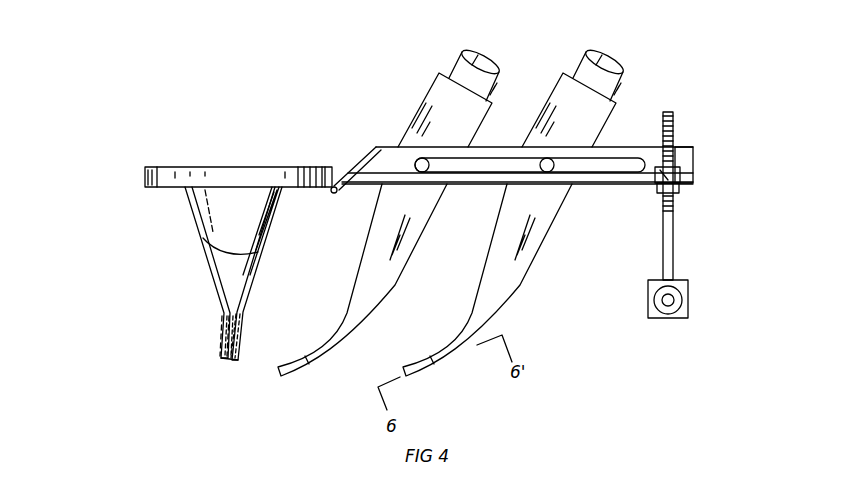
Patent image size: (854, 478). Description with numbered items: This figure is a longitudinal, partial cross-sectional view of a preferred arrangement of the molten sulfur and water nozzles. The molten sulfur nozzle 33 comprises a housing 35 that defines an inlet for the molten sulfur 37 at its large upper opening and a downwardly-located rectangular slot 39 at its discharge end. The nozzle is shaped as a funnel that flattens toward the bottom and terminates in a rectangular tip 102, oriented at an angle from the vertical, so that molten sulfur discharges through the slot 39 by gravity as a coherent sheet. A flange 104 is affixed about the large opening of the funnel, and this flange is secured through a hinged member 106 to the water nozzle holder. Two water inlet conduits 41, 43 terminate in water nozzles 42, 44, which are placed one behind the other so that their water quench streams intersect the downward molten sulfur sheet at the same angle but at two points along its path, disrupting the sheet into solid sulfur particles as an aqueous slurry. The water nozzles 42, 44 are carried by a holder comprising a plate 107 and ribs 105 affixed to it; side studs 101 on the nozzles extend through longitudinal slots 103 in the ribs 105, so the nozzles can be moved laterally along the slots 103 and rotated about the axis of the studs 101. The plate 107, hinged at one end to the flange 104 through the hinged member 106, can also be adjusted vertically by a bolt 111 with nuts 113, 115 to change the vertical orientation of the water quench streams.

The molten sulfur nozzle 33 is at (186, 218).
The housing 35 is at (270, 220).
The inlet for the molten sulfur 37 is at (236, 166).
The rectangular slot 39 is at (222, 358).
The water inlet conduit 41 is at (446, 92).
The water nozzle 42 is at (308, 360).
The water inlet conduit 43 is at (566, 97).
The water nozzle 44 is at (435, 365).
The side stud 101 is at (545, 160).
The rectangular tip 102 is at (222, 324).
The longitudinal slot 103 is at (620, 165).
The flange 104 is at (156, 178).
The rib 105 is at (378, 146).
The hinged member 106 is at (337, 170).
The plate 107 is at (705, 168).
The bolt 111 is at (676, 137).
The nut 113 is at (684, 188).
The nut 115 is at (657, 190).